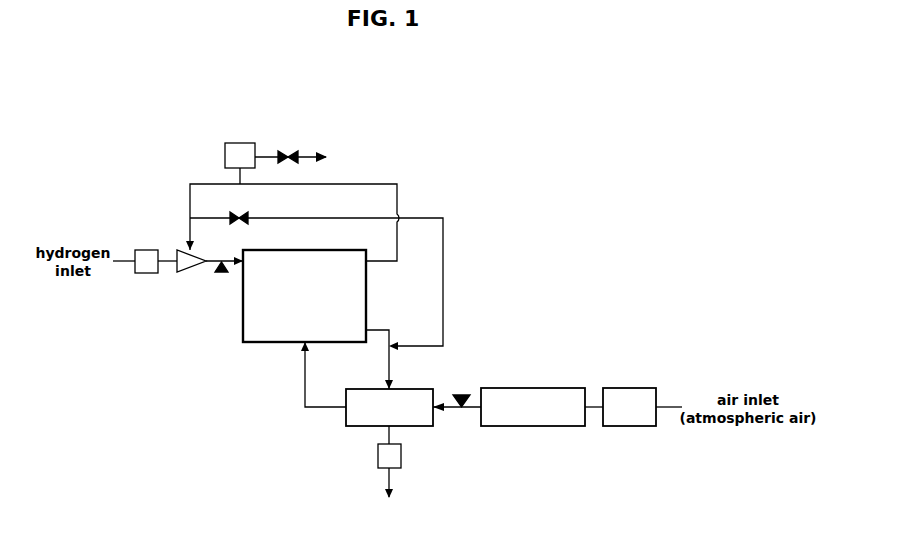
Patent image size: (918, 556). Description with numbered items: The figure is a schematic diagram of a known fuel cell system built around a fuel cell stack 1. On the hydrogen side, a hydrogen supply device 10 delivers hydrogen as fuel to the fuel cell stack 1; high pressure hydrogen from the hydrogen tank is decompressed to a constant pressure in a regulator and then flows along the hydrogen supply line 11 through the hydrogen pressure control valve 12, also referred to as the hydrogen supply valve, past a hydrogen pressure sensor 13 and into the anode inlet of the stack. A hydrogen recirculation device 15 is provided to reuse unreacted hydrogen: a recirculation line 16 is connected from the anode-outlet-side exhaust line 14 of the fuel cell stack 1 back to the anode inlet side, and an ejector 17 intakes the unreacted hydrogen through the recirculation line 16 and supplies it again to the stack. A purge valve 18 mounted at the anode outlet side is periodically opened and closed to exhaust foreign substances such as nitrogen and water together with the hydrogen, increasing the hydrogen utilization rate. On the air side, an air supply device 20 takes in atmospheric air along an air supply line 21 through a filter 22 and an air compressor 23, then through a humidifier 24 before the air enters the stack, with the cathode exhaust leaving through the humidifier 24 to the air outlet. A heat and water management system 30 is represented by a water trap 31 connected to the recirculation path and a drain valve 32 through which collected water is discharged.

The fuel cell stack 1 is at (265, 343).
The hydrogen supply device 10 is at (139, 336).
The hydrogen supply line 11 is at (126, 262).
The hydrogen pressure control valve 12 is at (146, 274).
The hydrogen pressure sensor 13 is at (222, 274).
The anode-outlet-side exhaust line 14 is at (383, 262).
The hydrogen recirculation device 15 is at (203, 252).
The recirculation line 16 is at (370, 183).
The ejector 17 is at (193, 273).
The purge valve 18 is at (231, 213).
The air supply device 20 is at (548, 357).
The air supply line 21 is at (450, 410).
The filter 22 is at (632, 428).
The air compressor 23 is at (532, 428).
The humidifier 24 is at (345, 418).
The heat and water management system 30 is at (280, 128).
The water trap 31 is at (241, 143).
The drain valve 32 is at (297, 152).